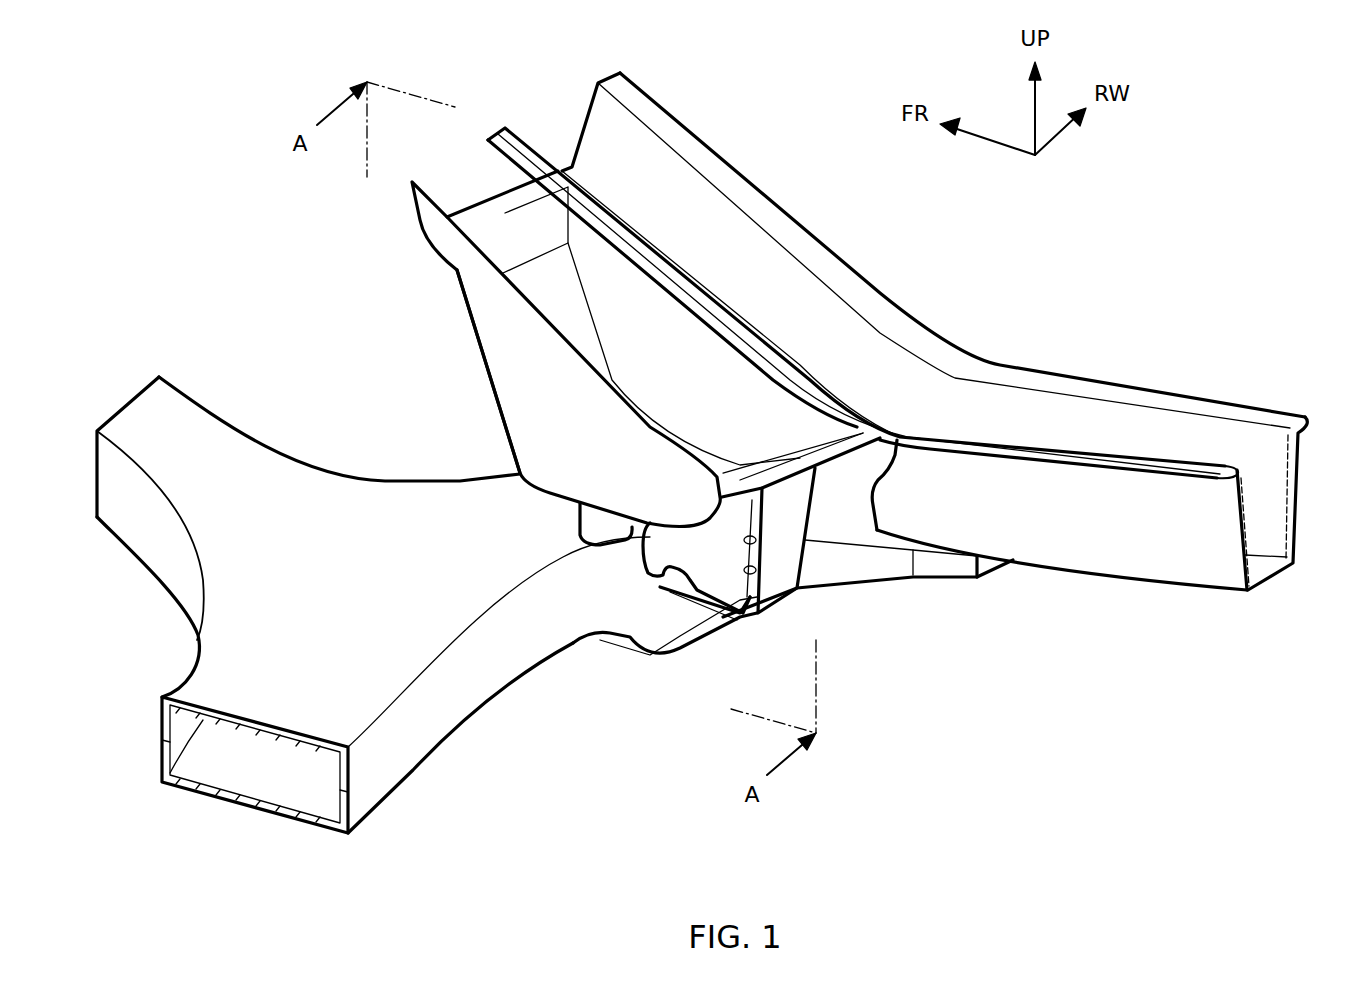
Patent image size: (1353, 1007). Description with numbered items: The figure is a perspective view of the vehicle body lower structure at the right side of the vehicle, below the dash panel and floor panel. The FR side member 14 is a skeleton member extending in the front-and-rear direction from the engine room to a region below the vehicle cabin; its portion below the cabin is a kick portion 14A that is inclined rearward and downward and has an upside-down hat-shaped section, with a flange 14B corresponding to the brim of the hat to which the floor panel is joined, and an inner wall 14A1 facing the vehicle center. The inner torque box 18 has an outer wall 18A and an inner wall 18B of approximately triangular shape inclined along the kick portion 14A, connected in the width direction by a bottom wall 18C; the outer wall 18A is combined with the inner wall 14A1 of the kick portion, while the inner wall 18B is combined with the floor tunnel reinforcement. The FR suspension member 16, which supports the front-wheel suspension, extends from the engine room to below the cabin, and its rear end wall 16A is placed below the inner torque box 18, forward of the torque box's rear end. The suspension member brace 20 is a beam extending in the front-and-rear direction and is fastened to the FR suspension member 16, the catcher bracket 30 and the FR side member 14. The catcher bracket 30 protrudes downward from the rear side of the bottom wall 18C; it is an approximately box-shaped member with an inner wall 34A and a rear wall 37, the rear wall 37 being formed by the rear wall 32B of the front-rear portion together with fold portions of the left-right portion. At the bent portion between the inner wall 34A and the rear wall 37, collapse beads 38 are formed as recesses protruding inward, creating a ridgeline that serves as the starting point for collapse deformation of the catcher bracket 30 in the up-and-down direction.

The FR side member 14 is at (892, 348).
The kick portion 14A is at (892, 348).
The inner wall 14A1 is at (1158, 557).
The flange 14B is at (500, 138).
The FR suspension member 16 is at (431, 752).
The rear end wall 16A is at (570, 603).
The inner torque box 18 is at (611, 331).
The outer wall 18A is at (588, 245).
The inner wall 18B is at (500, 396).
The bottom wall 18C is at (560, 310).
The suspension member brace 20 is at (945, 583).
The catcher bracket 30 is at (795, 595).
The rear wall 32B is at (787, 563).
The inner wall 34A is at (677, 603).
The rear wall 37 is at (826, 587).
The collapse bead 38 is at (687, 577).